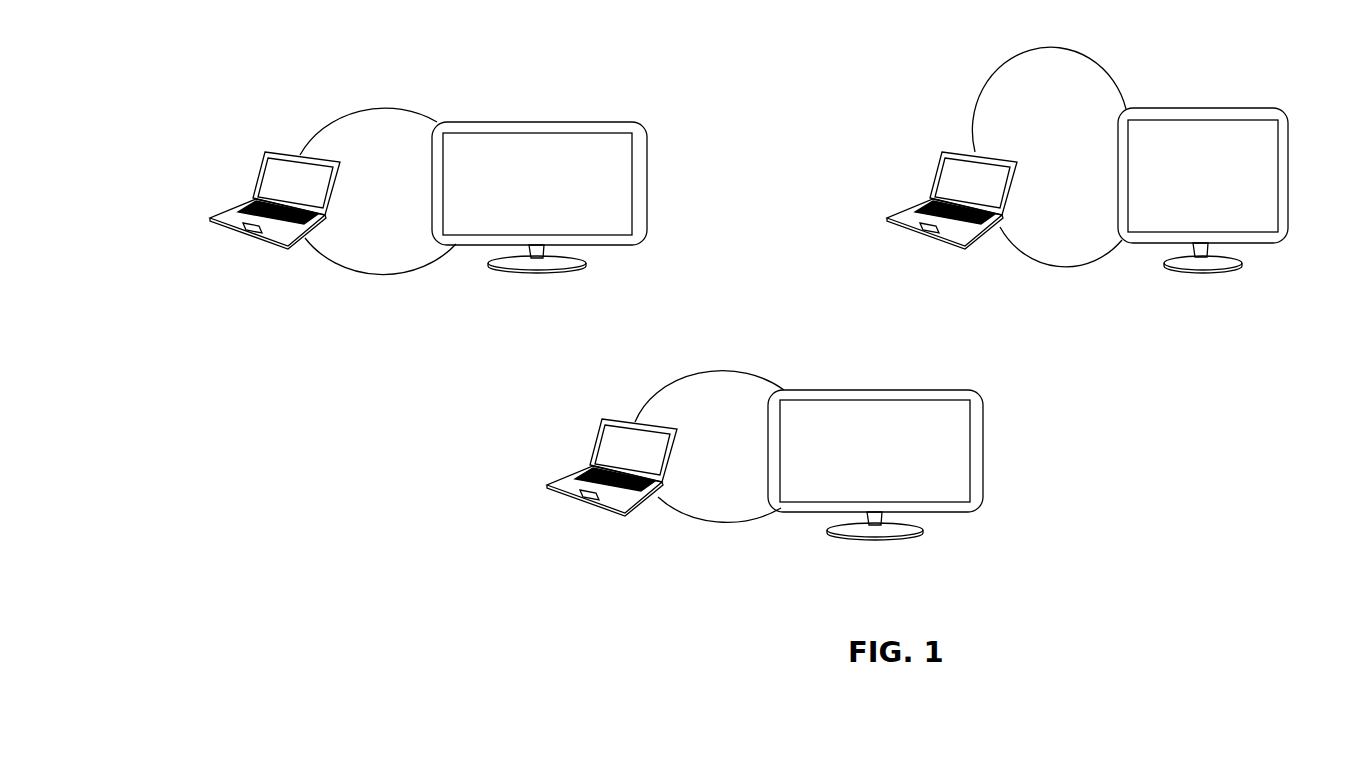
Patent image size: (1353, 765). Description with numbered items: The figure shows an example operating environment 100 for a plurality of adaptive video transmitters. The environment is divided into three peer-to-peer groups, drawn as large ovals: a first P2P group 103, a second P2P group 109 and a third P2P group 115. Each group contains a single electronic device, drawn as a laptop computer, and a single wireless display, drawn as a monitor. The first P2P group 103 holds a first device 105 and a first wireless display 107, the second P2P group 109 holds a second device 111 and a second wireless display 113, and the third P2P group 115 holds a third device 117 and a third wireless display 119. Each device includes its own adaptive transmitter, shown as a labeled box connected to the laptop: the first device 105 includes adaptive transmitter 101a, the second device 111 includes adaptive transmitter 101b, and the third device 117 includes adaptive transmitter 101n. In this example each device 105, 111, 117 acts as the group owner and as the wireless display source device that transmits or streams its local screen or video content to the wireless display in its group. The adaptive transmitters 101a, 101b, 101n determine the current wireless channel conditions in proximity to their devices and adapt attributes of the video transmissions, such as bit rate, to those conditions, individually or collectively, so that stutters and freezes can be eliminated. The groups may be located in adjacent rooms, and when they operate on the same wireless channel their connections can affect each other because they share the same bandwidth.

The operating environment 100 is at (772, 60).
The adaptive transmitter 101a is at (911, 220).
The adaptive transmitter 101b is at (234, 220).
The adaptive transmitter 101n is at (571, 487).
The first P2P group 103 is at (1093, 125).
The first device 105 is at (955, 168).
The first wireless display 107 is at (1248, 106).
The second P2P group 109 is at (408, 144).
The second device 111 is at (278, 168).
The second wireless display 113 is at (627, 142).
The third P2P group 115 is at (746, 405).
The third device 117 is at (615, 435).
The third wireless display 119 is at (964, 409).